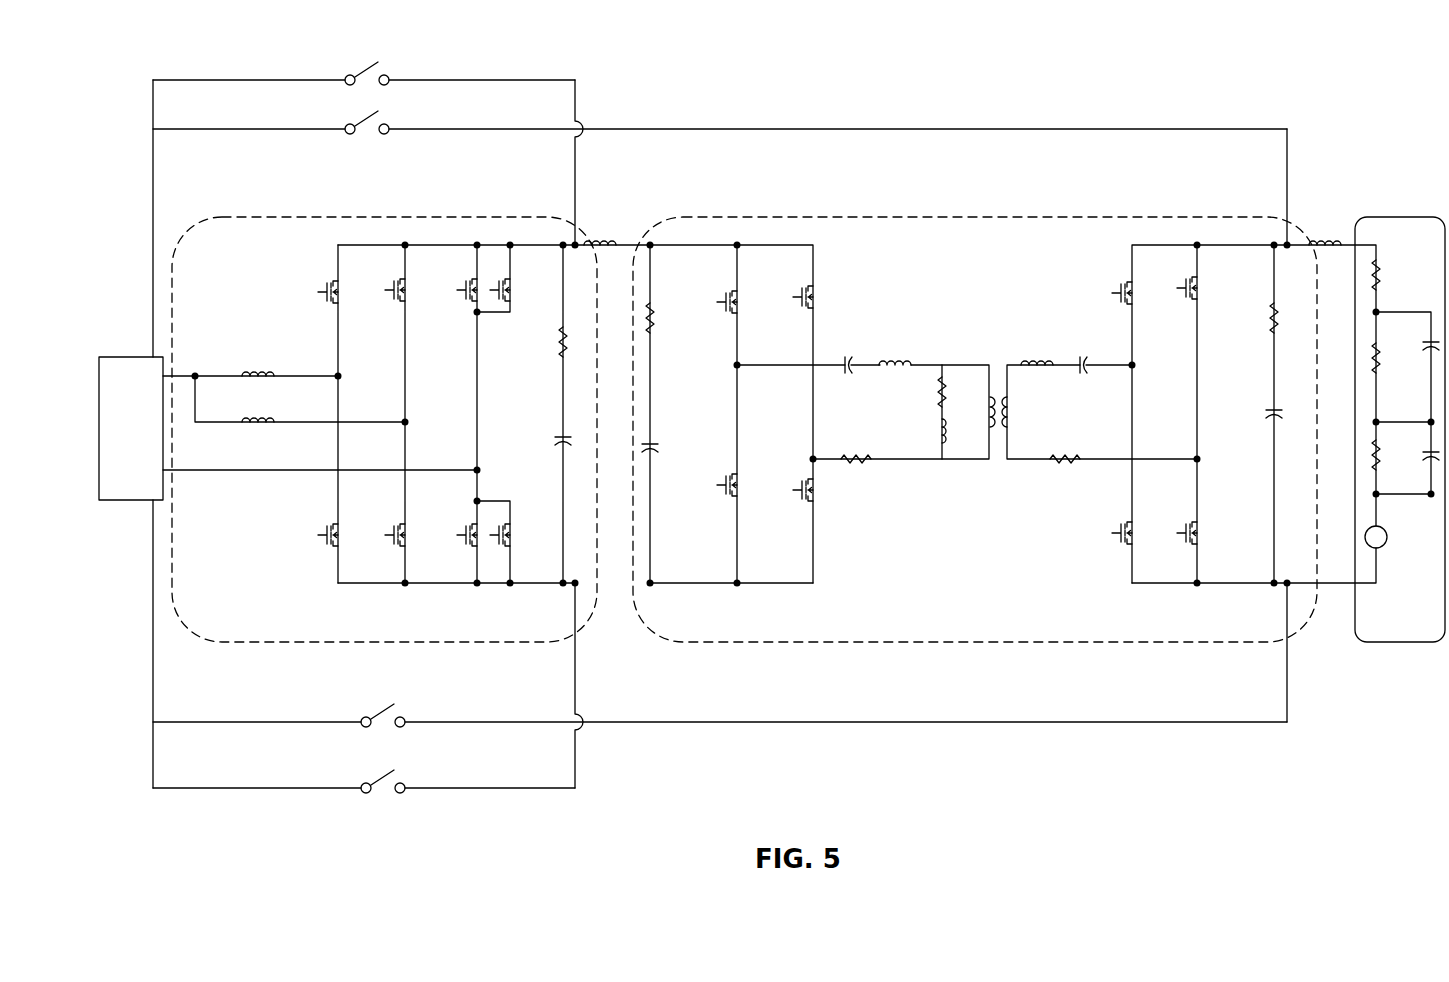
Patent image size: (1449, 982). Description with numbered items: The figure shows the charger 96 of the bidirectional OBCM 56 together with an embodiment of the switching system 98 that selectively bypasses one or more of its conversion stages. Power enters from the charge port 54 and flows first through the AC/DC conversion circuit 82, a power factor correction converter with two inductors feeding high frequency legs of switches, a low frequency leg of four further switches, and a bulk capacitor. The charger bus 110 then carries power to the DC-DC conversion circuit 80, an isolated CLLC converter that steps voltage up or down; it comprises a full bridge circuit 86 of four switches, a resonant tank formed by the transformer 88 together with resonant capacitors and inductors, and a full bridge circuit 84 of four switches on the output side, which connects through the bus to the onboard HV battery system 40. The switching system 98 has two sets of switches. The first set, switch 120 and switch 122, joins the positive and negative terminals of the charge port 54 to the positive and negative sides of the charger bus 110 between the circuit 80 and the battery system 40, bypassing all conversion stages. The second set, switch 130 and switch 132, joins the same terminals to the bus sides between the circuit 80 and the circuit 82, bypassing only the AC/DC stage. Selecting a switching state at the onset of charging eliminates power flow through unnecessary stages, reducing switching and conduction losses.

The onboard HV battery system 40 is at (1398, 217).
The charge port 54 is at (122, 357).
The OBCM 56 is at (780, 786).
The DC-DC conversion circuit 80 is at (1080, 217).
The AC/DC conversion circuit 82 is at (430, 217).
The full bridge circuit 84 is at (1206, 238).
The full bridge circuit 86 is at (766, 238).
The transformer 88 is at (967, 334).
The charger 96 is at (713, 751).
The switching system 98 is at (600, 86).
The charger bus 110 is at (545, 245).
The switch a1 120 is at (346, 135).
The switch b1 122 is at (362, 728).
The switch a2 130 is at (346, 86).
The switch b2 132 is at (362, 794).